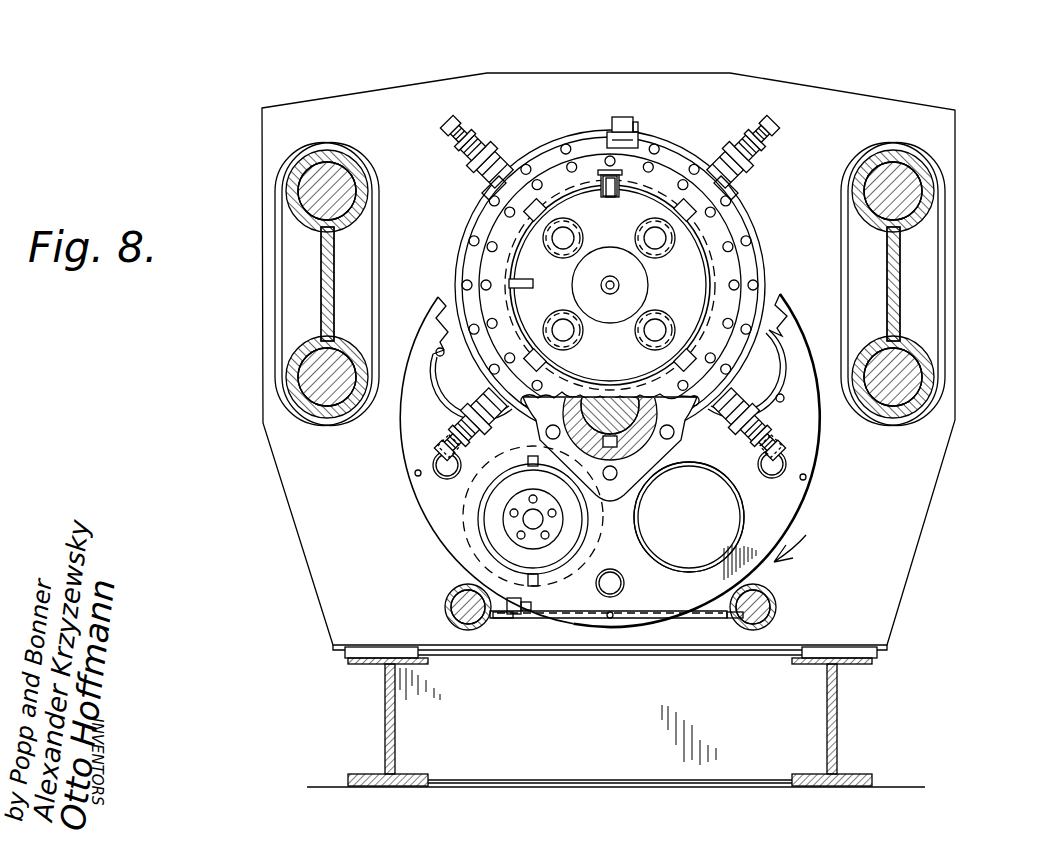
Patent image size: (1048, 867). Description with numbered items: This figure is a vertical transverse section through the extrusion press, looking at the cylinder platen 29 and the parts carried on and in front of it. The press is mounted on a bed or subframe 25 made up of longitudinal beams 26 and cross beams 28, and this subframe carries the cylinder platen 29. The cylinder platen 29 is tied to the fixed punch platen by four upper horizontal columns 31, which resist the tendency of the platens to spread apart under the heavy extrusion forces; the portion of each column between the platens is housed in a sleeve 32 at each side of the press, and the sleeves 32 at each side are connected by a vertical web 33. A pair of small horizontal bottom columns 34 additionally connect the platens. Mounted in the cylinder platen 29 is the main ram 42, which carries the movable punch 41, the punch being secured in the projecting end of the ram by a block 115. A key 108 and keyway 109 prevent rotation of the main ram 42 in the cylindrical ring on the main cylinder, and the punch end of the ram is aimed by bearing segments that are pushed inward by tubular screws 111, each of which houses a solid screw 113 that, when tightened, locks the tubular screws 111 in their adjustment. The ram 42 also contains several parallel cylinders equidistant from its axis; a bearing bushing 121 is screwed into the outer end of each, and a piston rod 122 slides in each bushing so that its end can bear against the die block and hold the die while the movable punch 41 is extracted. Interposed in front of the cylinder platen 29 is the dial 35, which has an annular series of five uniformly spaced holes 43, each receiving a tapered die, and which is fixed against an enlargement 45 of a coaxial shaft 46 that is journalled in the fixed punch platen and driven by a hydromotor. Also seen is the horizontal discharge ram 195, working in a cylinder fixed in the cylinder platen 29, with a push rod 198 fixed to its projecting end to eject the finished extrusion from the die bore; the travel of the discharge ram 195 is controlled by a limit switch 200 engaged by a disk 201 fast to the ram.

The cylinder platen 29 is at (935, 96).
The bed or subframe 25 is at (385, 731).
The longitudinal beams 26 is at (838, 762).
The cross beams 28 is at (790, 716).
The upper horizontal columns 31 is at (315, 183).
The sleeve 32 is at (298, 150).
The vertical web 33 is at (328, 290).
The bottom columns 34 is at (446, 612).
The dial 35 is at (812, 475).
The movable punch 41 is at (610, 290).
The main ram 42 is at (690, 266).
The holes 43 is at (436, 352).
The enlargement 45 is at (648, 466).
The shaft 46 is at (640, 400).
The key 108 is at (604, 196).
The keyway 109 is at (600, 180).
The tubular screw 111 is at (482, 180).
The screw 113 is at (482, 148).
The block 115 is at (614, 262).
The bearing bushing 121 is at (548, 236).
The piston rod 122 is at (558, 247).
The discharge ram 195 is at (478, 550).
The push rod 198 is at (527, 519).
The limit switch 200 is at (514, 612).
The disk 201 is at (470, 575).